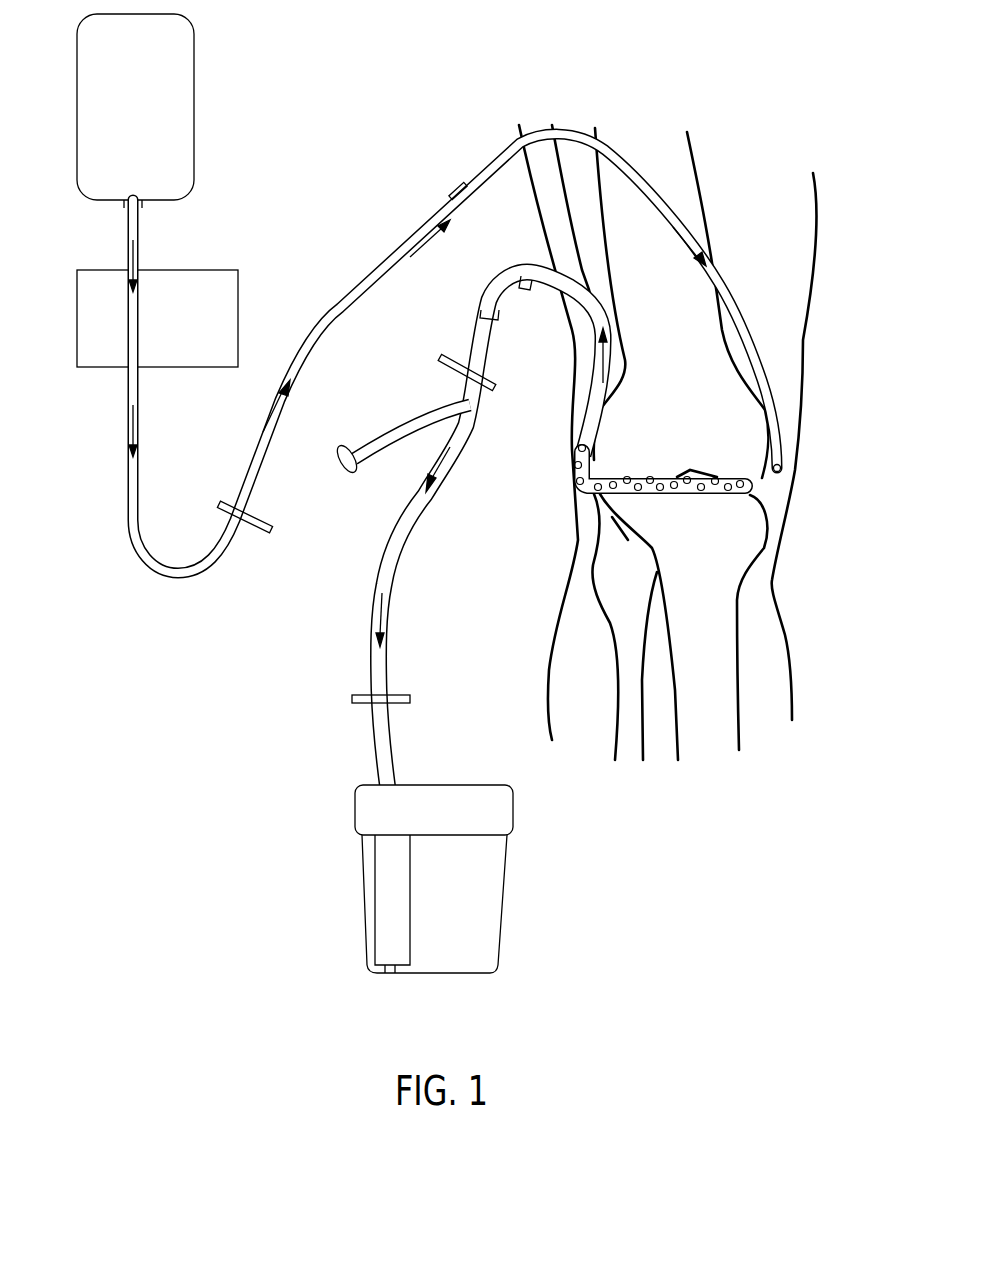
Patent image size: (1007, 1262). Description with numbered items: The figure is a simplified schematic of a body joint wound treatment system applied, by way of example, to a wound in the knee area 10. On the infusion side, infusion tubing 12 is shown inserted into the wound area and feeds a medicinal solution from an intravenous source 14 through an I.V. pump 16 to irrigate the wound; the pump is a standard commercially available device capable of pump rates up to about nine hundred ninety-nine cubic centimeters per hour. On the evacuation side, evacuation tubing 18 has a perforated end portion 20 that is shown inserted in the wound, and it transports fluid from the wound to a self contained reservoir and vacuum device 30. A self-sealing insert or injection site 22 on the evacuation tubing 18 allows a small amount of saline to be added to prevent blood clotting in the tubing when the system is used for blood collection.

The knee area 10 is at (797, 492).
The infusion tubing 12 is at (668, 213).
The intravenous (I.V.) source 14 is at (197, 98).
The I.V. pump 16 is at (245, 302).
The evacuation tubing 18 is at (449, 531).
The end portion 20 is at (575, 472).
The self-sealing insert or injection site 22 is at (417, 413).
The self contained reservoir and vacuum device 30 is at (363, 908).